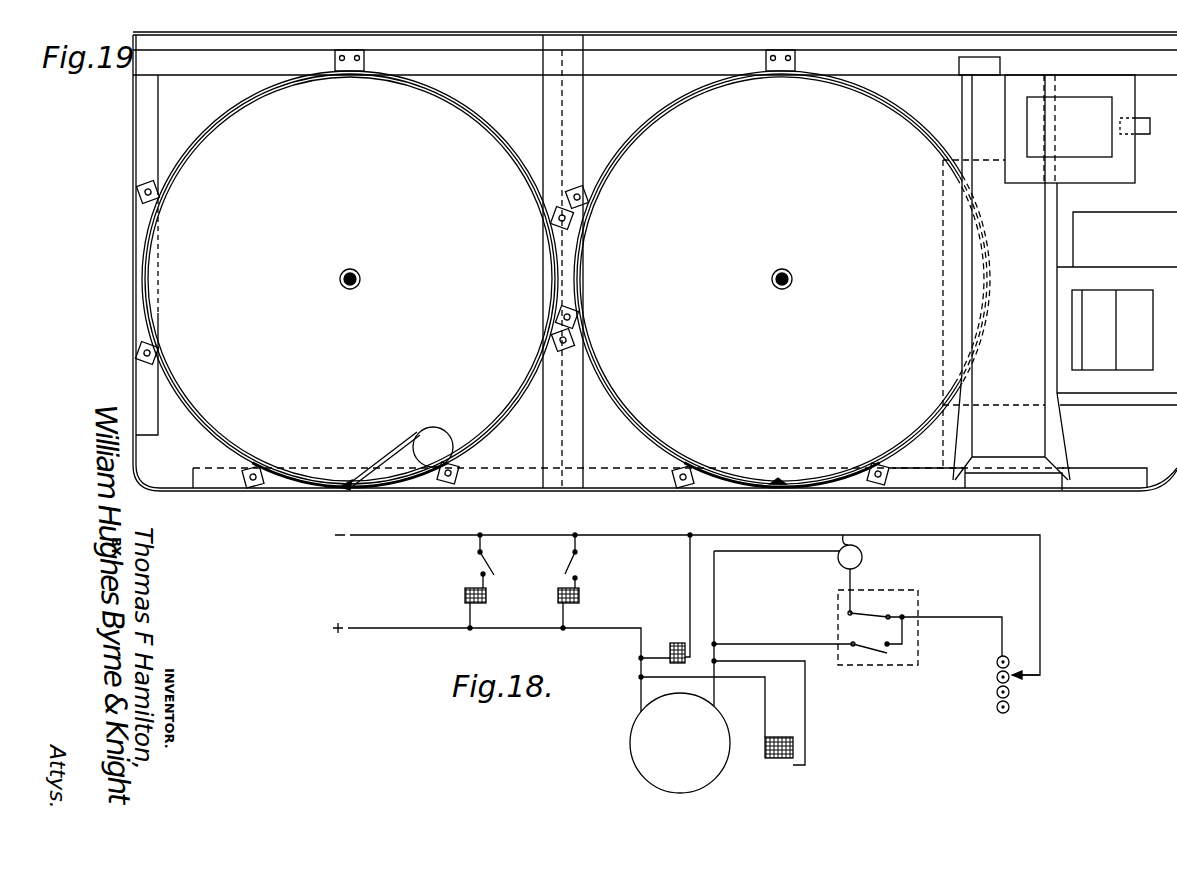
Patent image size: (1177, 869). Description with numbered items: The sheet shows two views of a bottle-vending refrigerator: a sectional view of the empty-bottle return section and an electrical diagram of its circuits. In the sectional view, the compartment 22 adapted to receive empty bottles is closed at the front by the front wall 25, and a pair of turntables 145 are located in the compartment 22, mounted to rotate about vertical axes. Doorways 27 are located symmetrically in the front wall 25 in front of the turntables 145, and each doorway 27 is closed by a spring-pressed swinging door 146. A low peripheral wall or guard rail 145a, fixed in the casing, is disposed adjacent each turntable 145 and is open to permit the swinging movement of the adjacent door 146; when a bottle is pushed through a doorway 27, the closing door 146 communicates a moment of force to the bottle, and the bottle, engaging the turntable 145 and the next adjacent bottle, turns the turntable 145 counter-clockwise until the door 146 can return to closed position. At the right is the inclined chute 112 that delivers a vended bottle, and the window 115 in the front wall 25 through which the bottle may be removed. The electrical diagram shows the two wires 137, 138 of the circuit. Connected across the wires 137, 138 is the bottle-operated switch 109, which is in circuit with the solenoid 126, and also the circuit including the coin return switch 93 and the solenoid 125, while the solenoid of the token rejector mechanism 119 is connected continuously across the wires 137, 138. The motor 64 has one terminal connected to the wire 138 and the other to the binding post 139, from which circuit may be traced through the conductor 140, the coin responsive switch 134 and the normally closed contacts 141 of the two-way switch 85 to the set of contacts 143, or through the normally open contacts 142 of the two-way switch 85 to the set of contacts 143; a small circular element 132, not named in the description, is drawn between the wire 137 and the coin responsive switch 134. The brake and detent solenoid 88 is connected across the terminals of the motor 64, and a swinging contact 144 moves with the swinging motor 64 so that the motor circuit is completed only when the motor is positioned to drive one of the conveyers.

In FIG. 19, the compartment 22 is at (499, 88).
In FIG. 19, the front wall 25 is at (258, 490).
In FIG. 19, the doorway 27 is at (352, 490).
In FIG. 19, the guard rail 145a is at (225, 425).
In FIG. 19, the turntable 145 is at (395, 492).
In FIG. 19, the swinging door 146 is at (393, 455).
In FIG. 19, the inclined chute 112 is at (1060, 277).
In FIG. 19, the window 115 is at (1057, 492).
In FIG. 18, the wire 137 is at (406, 540).
In FIG. 18, the wire 138 is at (398, 628).
In FIG. 18, the bottle-operated switch 109 is at (473, 562).
In FIG. 18, the coin return switch 93 is at (582, 558).
In FIG. 18, the solenoid 126 is at (462, 597).
In FIG. 18, the solenoid 125 is at (583, 597).
In FIG. 18, the token rejector mechanism 119 is at (676, 643).
In FIG. 18, the conductor 140 is at (718, 576).
In FIG. 18, the binding post 139 is at (714, 643).
In FIG. 18, the brake and detent solenoid 88 is at (777, 760).
In FIG. 18, the motor 64 is at (680, 743).
In FIG. 18, the lamp 132 is at (858, 557).
In FIG. 18, the coin responsive switch 134 is at (856, 528).
In FIG. 18, the two-way switch 85 is at (898, 590).
In FIG. 18, the normally closed contacts 141 is at (925, 634).
In FIG. 18, the normally open contacts 142 is at (872, 658).
In FIG. 18, the set of contacts 143 is at (996, 706).
In FIG. 18, the swinging contact 144 is at (1016, 678).